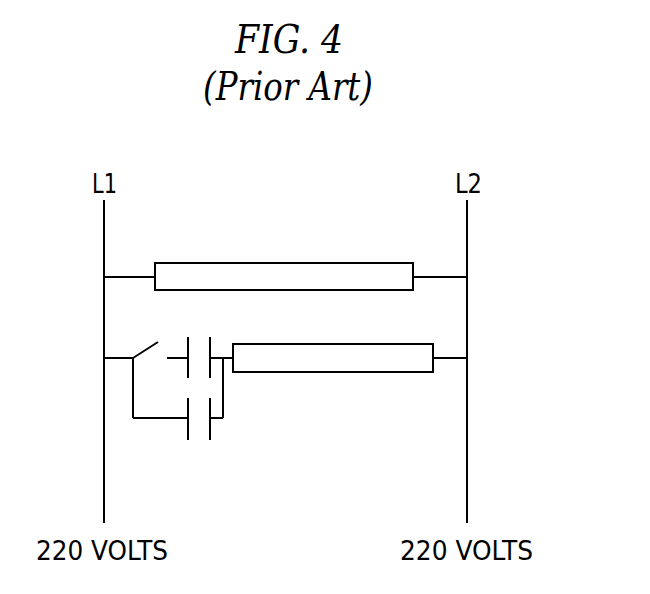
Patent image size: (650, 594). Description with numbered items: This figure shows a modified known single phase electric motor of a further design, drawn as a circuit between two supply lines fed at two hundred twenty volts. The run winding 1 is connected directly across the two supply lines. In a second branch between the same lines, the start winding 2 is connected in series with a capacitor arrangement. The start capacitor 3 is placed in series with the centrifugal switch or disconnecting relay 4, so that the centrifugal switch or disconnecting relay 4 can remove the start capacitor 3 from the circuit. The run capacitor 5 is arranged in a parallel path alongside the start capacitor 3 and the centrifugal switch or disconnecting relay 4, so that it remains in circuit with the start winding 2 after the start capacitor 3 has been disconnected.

The run winding 1 is at (285, 261).
The start winding 2 is at (345, 344).
The start capacitor 3 is at (195, 343).
The centrifugal switch or disconnecting relay 4 is at (131, 336).
The run capacitor 5 is at (178, 417).